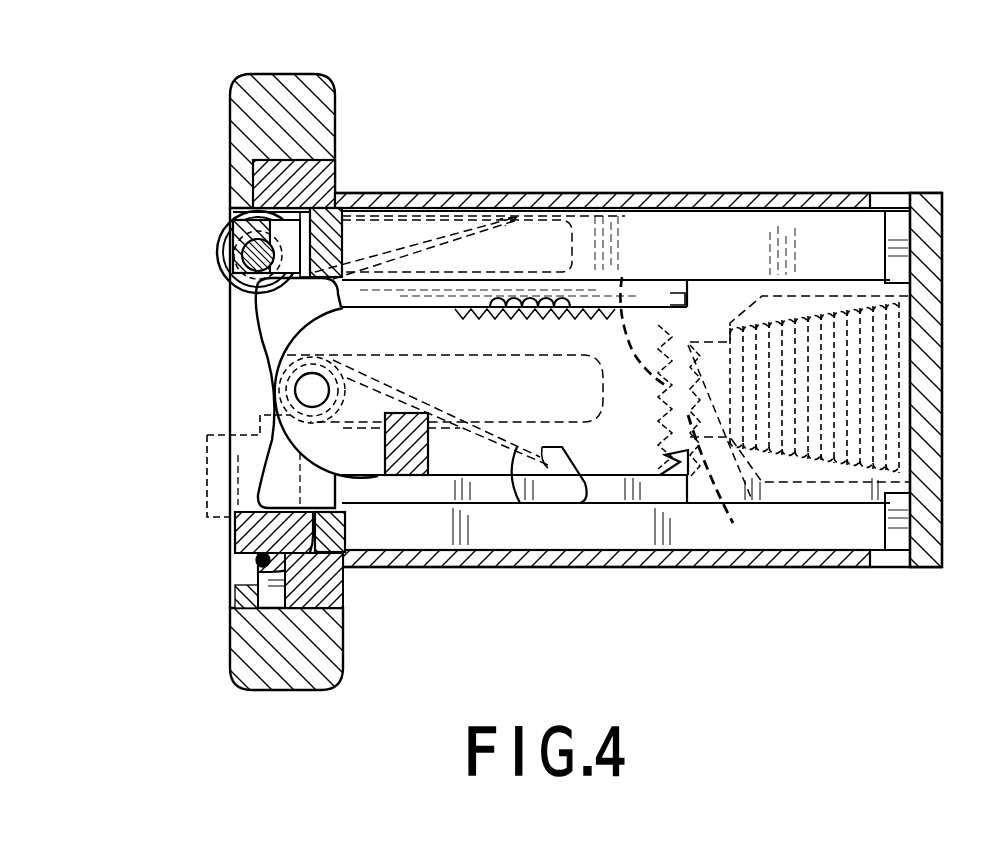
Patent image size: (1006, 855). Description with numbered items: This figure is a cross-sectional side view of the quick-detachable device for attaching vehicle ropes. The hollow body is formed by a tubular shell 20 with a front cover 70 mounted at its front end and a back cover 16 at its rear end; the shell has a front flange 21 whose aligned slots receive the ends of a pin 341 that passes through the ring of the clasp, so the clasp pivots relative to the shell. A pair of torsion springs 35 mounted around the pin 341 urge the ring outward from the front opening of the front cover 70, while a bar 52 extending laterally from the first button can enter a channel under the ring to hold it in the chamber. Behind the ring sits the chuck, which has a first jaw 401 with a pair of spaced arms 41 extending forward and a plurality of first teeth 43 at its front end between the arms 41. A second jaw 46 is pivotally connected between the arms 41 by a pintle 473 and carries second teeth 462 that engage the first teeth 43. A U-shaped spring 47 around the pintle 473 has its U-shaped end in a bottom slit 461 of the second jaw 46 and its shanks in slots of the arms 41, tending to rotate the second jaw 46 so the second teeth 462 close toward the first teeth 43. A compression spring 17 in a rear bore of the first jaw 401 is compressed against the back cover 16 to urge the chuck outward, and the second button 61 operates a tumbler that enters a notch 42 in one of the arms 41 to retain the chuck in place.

The front cover 70 is at (306, 115).
The front flange 21 is at (303, 177).
The tubular shell 20 is at (651, 194).
The back cover 16 is at (920, 260).
The compression spring 17 is at (800, 327).
The first jaw 401 is at (713, 288).
The second teeth 462 is at (624, 248).
The torsion springs 35 is at (218, 247).
The pin 341 is at (232, 287).
The second jaw 46 is at (282, 320).
The pintle 473 is at (305, 392).
The second button 61 is at (210, 447).
The bar 52 is at (237, 563).
The notch 42 is at (397, 482).
The spaced arms 41 is at (453, 478).
The U-shaped spring 47 is at (517, 447).
The bottom slit 461 is at (587, 460).
The first teeth 43 is at (718, 495).